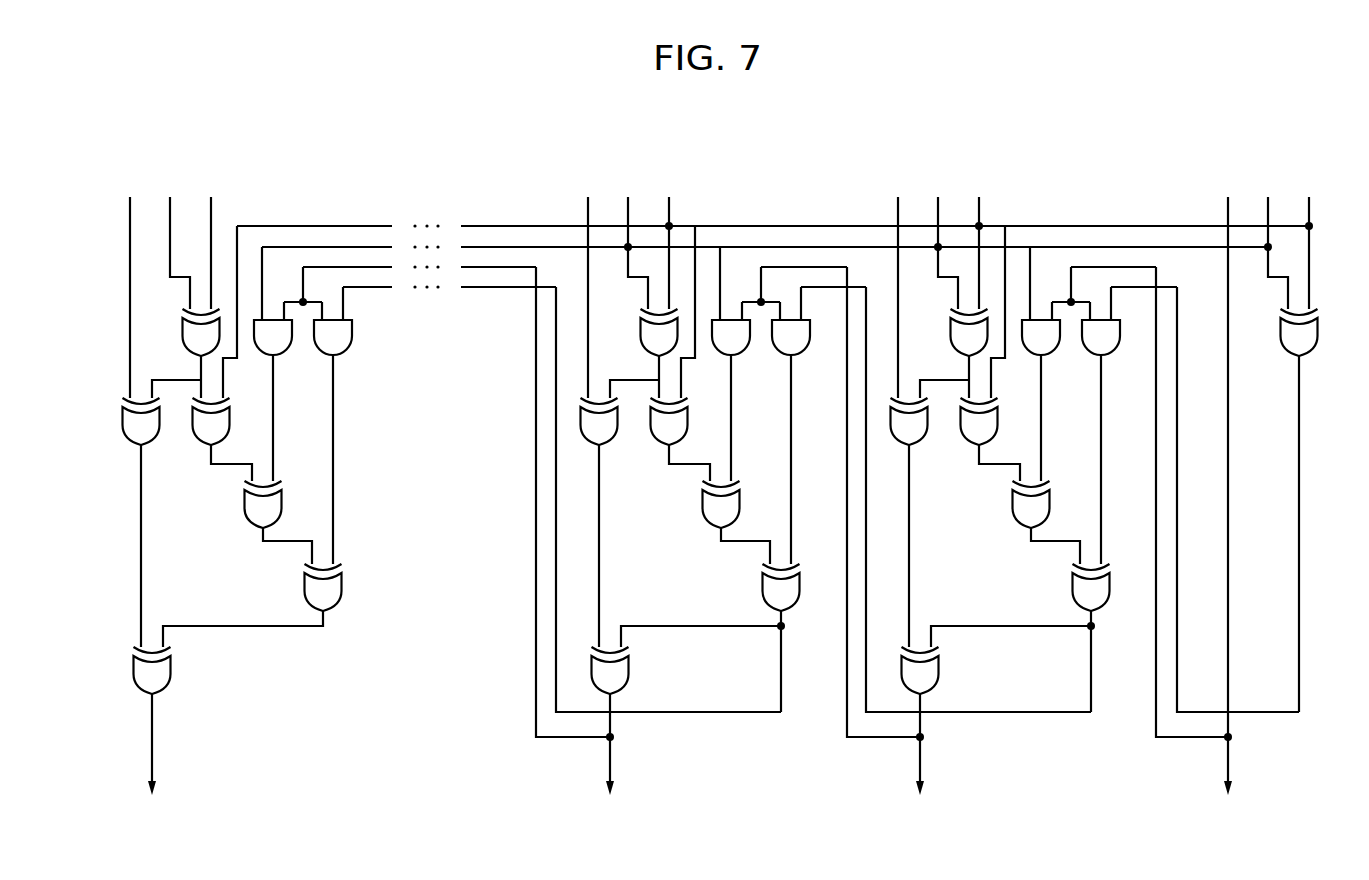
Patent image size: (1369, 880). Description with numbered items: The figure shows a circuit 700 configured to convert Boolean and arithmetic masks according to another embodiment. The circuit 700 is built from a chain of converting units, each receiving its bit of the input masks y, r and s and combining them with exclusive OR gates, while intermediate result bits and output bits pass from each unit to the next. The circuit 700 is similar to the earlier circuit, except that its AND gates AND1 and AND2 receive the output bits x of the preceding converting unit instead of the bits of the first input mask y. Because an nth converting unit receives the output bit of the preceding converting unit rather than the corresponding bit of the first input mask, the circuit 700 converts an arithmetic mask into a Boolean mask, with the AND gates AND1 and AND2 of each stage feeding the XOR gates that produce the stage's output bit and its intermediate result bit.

The circuit 700 is at (1112, 146).
The AND gate AND1 is at (798, 352).
The AND gate AND2 is at (739, 352).